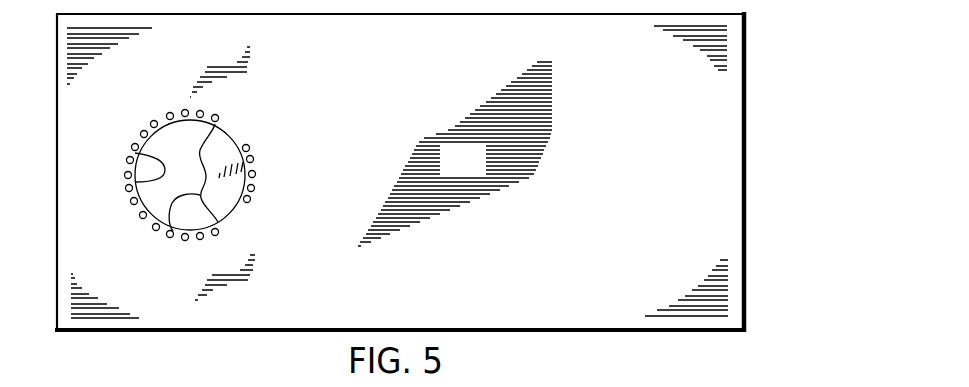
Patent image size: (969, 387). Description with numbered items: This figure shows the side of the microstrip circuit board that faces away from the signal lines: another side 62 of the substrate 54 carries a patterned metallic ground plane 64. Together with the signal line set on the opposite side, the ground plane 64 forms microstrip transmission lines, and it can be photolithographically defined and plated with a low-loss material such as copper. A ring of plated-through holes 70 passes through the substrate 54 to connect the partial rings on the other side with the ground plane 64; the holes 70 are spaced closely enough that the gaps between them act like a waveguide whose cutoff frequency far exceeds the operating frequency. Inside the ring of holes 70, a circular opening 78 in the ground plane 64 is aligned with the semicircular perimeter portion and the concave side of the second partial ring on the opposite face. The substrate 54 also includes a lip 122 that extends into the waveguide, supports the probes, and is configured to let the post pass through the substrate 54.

The substrate 54 is at (755, 50).
The another side 62 is at (730, 77).
The ground plane 64 is at (482, 172).
The plated-through holes 70 is at (254, 159).
The circular opening 78 is at (135, 182).
The lip 122 is at (173, 231).